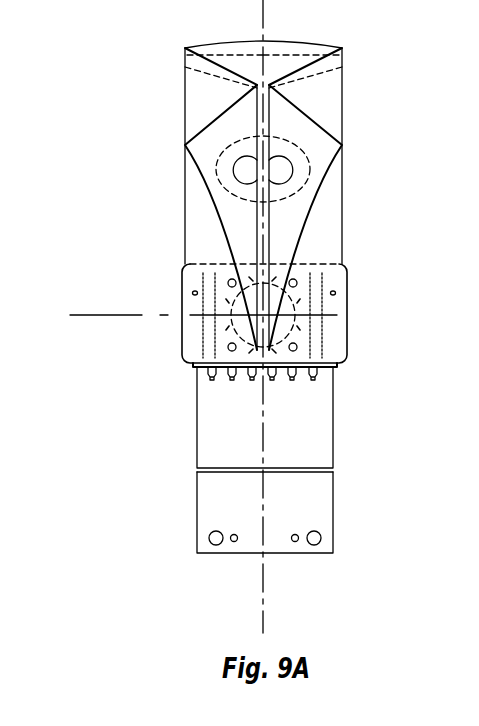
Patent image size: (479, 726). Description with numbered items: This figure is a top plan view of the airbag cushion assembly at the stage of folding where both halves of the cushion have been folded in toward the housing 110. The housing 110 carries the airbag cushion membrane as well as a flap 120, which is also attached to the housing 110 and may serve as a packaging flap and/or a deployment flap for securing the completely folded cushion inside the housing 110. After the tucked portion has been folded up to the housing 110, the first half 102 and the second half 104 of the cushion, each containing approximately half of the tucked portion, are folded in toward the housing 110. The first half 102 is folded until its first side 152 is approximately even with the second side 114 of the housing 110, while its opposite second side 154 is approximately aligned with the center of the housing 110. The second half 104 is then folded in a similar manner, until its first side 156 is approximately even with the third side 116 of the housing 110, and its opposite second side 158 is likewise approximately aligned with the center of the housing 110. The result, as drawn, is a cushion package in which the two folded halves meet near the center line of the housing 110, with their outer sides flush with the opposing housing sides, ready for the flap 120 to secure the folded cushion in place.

The first half 102 is at (353, 73).
The second half 104 is at (163, 115).
The second side 154 is at (268, 97).
The first side 152 is at (343, 188).
The first side 156 is at (184, 204).
The second side 158 is at (258, 217).
The second side 114 is at (348, 293).
The third side 116 is at (183, 328).
The housing 110 is at (337, 352).
The flap 120 is at (313, 500).